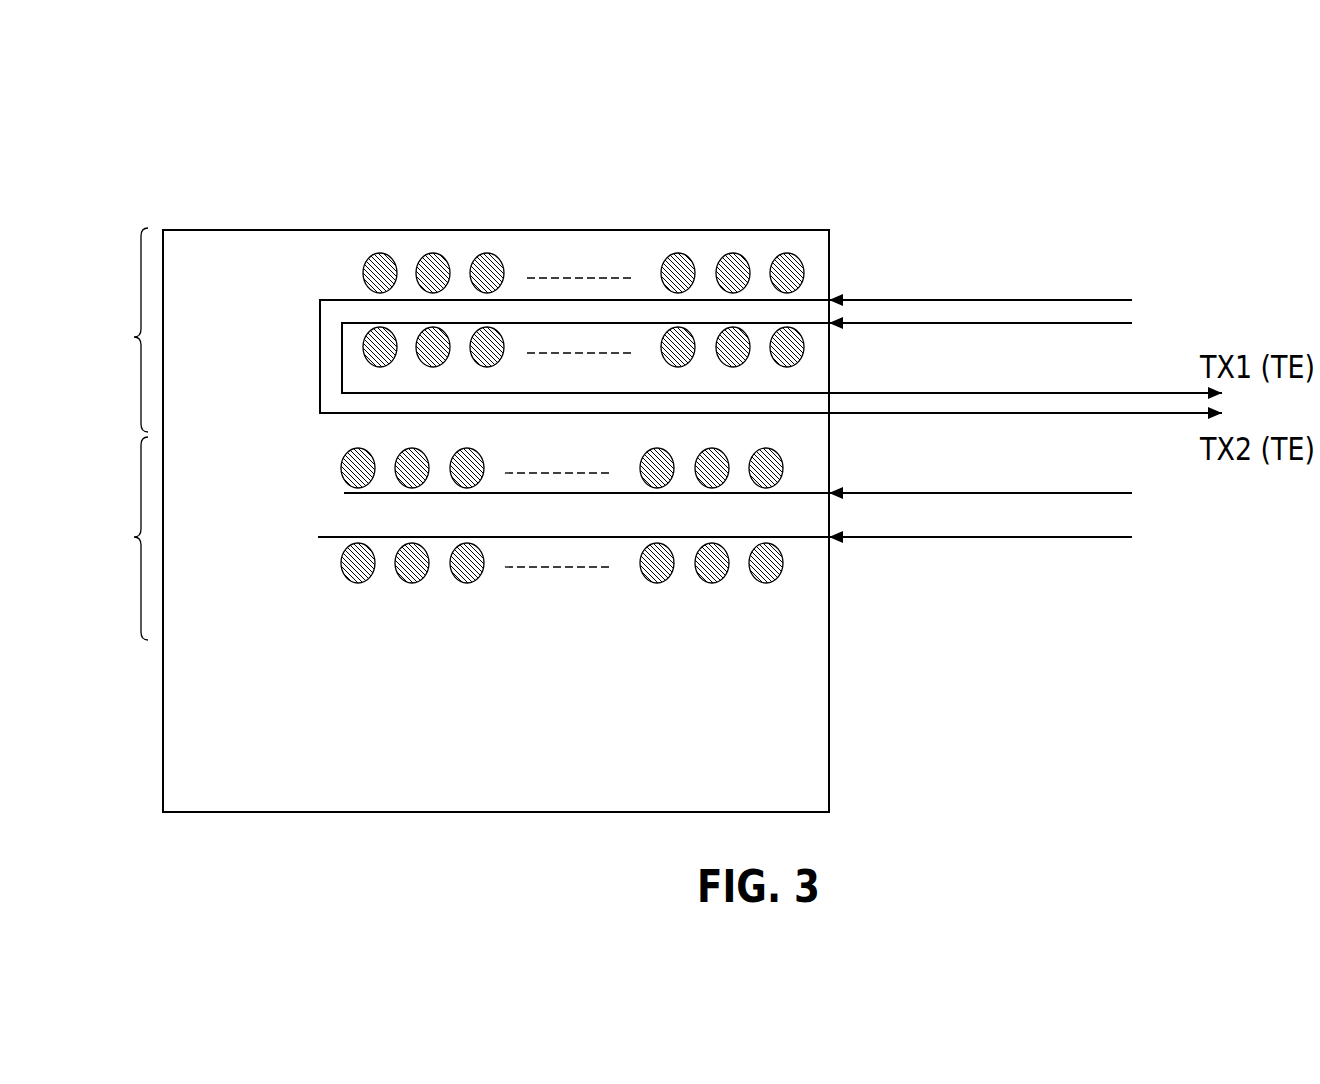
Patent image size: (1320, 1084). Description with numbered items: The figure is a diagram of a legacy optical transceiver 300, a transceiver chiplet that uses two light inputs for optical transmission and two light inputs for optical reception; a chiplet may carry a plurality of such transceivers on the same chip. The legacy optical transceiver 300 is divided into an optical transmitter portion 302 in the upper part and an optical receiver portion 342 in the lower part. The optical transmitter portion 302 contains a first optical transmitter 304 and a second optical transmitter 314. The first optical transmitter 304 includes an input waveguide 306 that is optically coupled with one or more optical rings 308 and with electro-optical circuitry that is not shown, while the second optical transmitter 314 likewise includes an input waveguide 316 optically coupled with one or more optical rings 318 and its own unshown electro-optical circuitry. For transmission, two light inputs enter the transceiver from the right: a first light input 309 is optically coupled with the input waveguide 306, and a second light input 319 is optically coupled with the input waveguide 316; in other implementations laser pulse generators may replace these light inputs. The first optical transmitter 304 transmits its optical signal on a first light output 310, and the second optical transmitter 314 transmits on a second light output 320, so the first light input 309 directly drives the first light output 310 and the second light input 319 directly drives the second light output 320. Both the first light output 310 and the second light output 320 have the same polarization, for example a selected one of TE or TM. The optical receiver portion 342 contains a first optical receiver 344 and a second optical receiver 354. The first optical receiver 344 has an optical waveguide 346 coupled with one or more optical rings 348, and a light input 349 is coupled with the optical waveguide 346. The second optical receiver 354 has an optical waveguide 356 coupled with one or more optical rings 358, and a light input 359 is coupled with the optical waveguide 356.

The legacy optical transceiver 300 is at (977, 139).
The optical transmitter portion 302 is at (121, 330).
The first optical transmitter 304 is at (302, 276).
The input waveguide 306 is at (537, 298).
The optical rings 308 is at (673, 254).
The first light input 309 is at (886, 300).
The first light output 310 is at (767, 414).
The second optical transmitter 314 is at (224, 331).
The input waveguide 316 is at (570, 323).
The optical rings 318 is at (684, 328).
The second light input 319 is at (878, 323).
The second light output 320 is at (787, 394).
The optical receiver portion 342 is at (122, 538).
The first optical receiver 344 is at (222, 477).
The optical waveguide 346 is at (498, 495).
The optical rings 348 is at (646, 480).
The light input 349 is at (1117, 493).
The second optical receiver 354 is at (222, 545).
The optical waveguide 356 is at (568, 538).
The optical rings 358 is at (665, 578).
The light input 359 is at (907, 540).